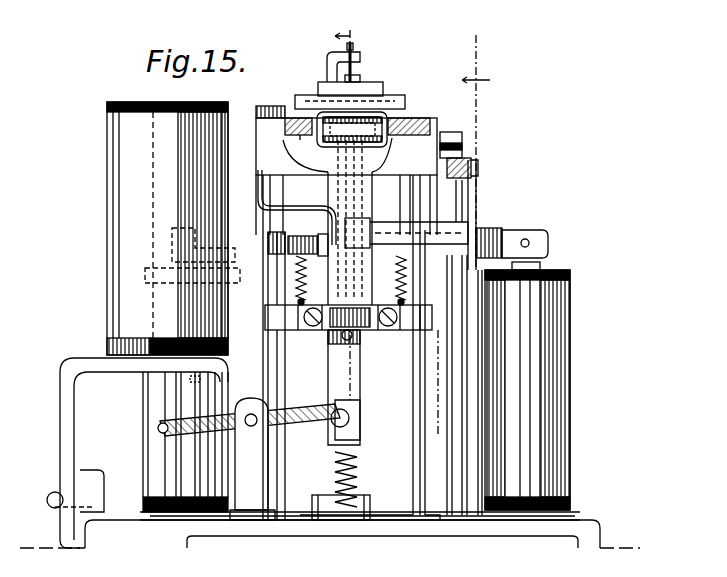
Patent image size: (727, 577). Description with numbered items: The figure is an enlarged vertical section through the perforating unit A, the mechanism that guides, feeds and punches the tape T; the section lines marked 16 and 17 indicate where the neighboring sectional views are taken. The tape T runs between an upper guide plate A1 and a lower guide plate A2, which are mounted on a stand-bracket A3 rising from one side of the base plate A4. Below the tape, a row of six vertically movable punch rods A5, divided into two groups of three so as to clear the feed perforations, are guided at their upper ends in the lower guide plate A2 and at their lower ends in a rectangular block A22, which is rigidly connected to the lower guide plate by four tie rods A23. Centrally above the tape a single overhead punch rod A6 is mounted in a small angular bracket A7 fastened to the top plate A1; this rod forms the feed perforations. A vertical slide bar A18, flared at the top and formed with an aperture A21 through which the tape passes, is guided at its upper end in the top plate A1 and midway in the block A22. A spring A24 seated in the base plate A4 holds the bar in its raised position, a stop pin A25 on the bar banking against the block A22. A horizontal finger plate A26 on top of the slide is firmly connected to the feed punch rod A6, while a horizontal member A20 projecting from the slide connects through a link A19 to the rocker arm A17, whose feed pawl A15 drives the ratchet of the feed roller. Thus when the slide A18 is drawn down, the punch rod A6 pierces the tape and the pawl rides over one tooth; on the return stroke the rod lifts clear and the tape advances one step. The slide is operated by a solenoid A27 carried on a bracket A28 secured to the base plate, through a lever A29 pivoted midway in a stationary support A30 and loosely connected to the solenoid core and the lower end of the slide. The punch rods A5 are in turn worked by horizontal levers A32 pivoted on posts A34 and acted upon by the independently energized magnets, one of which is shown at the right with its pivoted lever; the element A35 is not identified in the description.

The perforating unit A is at (71, 407).
The upper guide plate A1 is at (420, 128).
The lower guide plate A2 is at (400, 170).
The stand-bracket A3 is at (378, 425).
The base plate A4 is at (576, 519).
The punch rods A5 is at (340, 184).
The overhead punch rod A6 is at (358, 74).
The angular bracket A7 is at (358, 58).
The feed pawl A15 is at (462, 150).
The rocker arm A17 is at (468, 170).
The slide bar A18 is at (368, 380).
The link A19 is at (470, 215).
The horizontal member A20 is at (440, 232).
The aperture A21 is at (384, 96).
The rectangular block A22 is at (272, 380).
The tie rods A23 is at (258, 196).
The spring A24 is at (355, 478).
The stop pin A25 is at (343, 338).
The finger plate A26 is at (385, 96).
The solenoid A27 is at (173, 228).
The bracket A28 is at (76, 445).
The lever A29 is at (196, 438).
The stationary support A30 is at (266, 488).
The levers A32 is at (296, 244).
The posts A34 is at (462, 418).
The cross bar A35 is at (398, 284).
The tape T is at (385, 125).
The section line 16 is at (458, 235).
The section line 17 is at (347, 205).